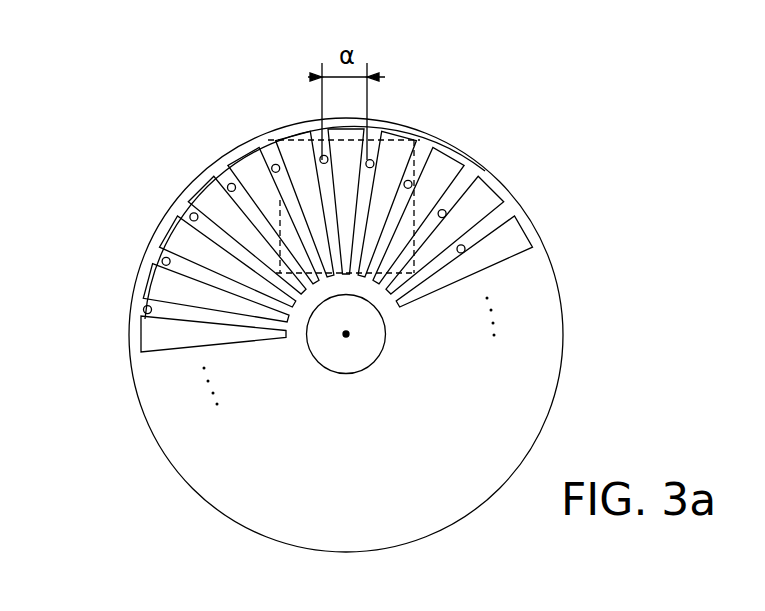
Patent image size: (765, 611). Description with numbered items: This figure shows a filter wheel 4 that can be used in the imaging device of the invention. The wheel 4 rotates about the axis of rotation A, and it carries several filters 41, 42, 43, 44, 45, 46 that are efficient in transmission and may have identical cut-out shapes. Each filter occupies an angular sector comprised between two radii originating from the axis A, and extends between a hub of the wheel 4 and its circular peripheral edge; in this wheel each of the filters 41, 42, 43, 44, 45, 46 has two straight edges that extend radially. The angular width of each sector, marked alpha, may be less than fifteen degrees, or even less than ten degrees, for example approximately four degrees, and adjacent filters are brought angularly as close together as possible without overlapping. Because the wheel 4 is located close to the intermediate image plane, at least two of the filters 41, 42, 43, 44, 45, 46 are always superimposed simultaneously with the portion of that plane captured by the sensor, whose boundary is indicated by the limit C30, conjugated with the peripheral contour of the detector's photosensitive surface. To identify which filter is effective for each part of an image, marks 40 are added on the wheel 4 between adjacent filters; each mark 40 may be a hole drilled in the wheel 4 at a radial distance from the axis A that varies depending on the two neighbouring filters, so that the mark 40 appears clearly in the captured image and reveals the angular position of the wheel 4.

The wheel 4 is at (600, 182).
The mark 40 is at (178, 248).
The filter 41 is at (348, 128).
The filter 42 is at (297, 142).
The filter 43 is at (242, 153).
The filter 44 is at (212, 198).
The filter 45 is at (165, 258).
The filter 46 is at (140, 300).
The axis of rotation A is at (346, 334).
The limit C30 is at (478, 162).